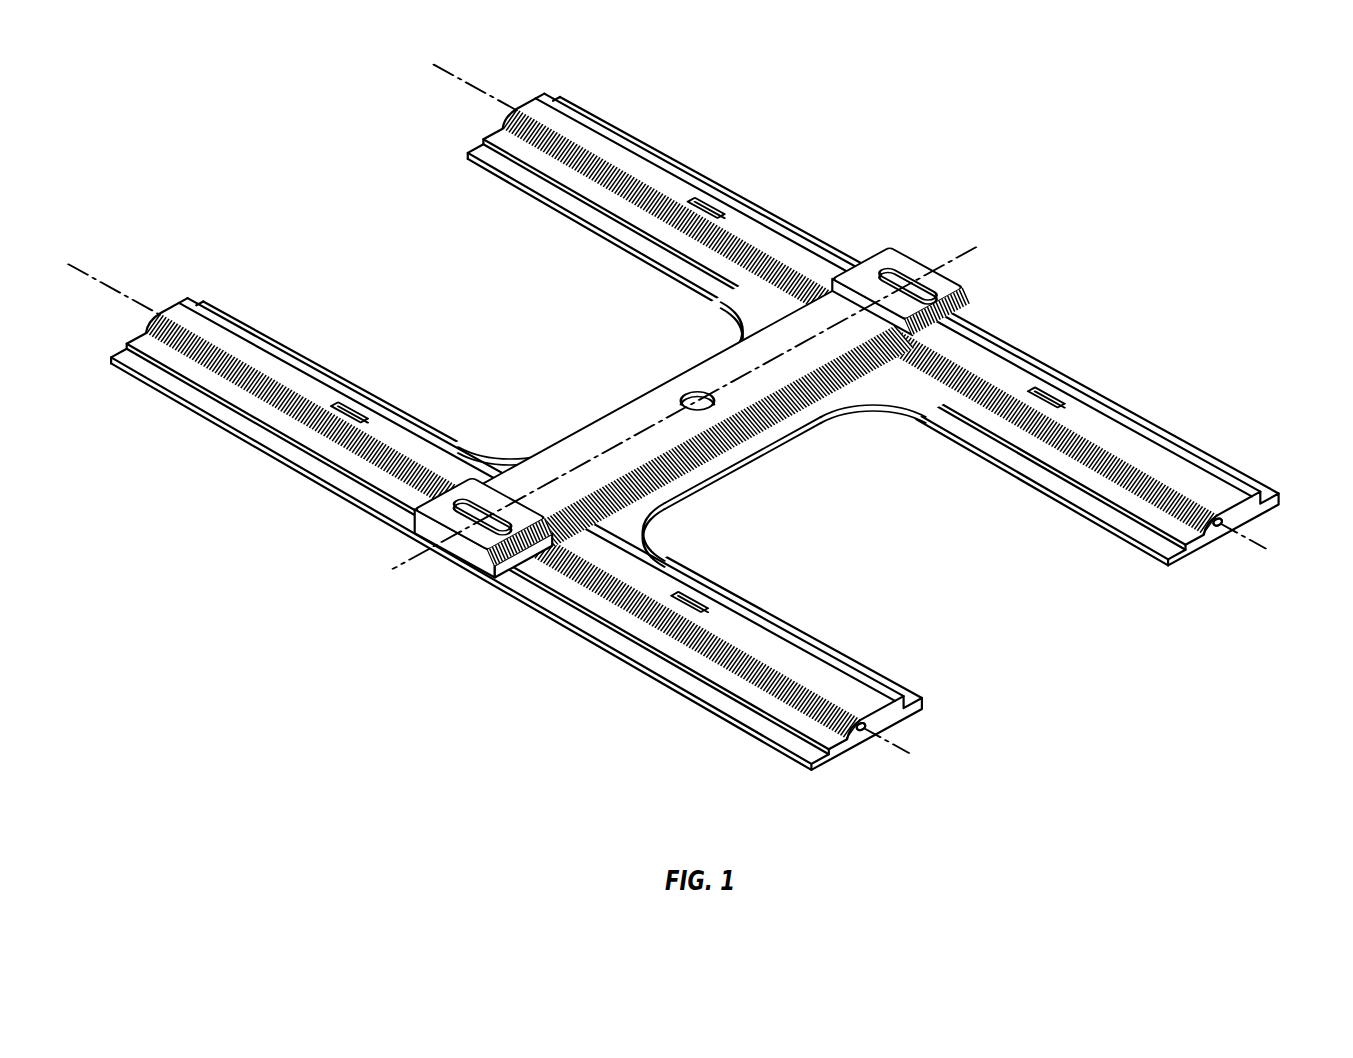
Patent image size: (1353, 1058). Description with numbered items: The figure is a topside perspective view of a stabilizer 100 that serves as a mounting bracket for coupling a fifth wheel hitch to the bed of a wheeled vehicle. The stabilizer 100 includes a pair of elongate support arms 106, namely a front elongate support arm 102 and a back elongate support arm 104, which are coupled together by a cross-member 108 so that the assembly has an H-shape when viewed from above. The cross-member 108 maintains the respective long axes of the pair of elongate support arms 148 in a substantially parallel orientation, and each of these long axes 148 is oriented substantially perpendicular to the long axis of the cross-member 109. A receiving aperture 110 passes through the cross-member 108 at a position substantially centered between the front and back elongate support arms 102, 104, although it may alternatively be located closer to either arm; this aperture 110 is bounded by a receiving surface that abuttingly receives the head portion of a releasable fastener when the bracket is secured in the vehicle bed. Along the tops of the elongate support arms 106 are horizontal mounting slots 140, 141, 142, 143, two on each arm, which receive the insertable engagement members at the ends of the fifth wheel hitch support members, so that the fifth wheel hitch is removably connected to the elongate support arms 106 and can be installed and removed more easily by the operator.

The stabilizer 100 is at (706, 417).
The front elongate support arm 102 is at (498, 113).
The back elongate support arm 104 is at (185, 289).
The pair of elongate support arms 106 is at (673, 417).
The cross-member 108 is at (621, 396).
The long axis of the cross-member 109 is at (964, 247).
The receiving aperture 110 is at (696, 391).
The horizontal mounting slot 140 is at (359, 400).
The horizontal mounting slot 141 is at (689, 596).
The horizontal mounting slot 142 is at (1045, 390).
The horizontal mounting slot 143 is at (704, 198).
The long axes of the elongate support arms 148 is at (1265, 545).